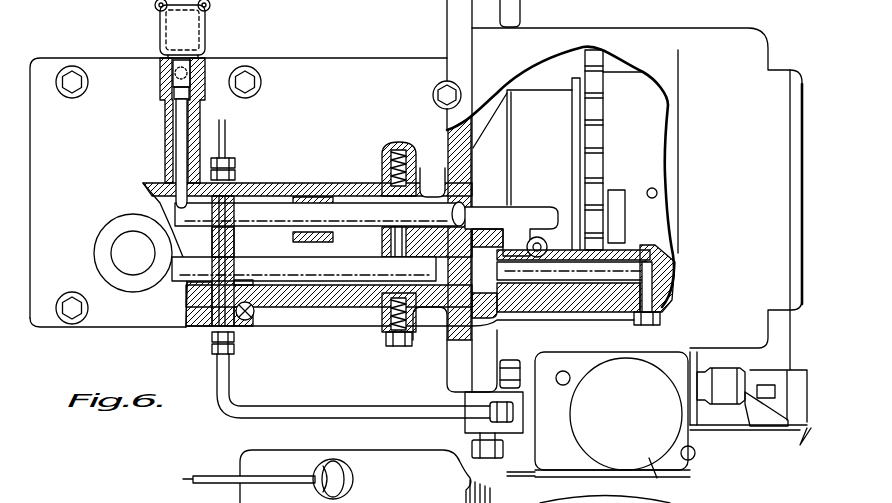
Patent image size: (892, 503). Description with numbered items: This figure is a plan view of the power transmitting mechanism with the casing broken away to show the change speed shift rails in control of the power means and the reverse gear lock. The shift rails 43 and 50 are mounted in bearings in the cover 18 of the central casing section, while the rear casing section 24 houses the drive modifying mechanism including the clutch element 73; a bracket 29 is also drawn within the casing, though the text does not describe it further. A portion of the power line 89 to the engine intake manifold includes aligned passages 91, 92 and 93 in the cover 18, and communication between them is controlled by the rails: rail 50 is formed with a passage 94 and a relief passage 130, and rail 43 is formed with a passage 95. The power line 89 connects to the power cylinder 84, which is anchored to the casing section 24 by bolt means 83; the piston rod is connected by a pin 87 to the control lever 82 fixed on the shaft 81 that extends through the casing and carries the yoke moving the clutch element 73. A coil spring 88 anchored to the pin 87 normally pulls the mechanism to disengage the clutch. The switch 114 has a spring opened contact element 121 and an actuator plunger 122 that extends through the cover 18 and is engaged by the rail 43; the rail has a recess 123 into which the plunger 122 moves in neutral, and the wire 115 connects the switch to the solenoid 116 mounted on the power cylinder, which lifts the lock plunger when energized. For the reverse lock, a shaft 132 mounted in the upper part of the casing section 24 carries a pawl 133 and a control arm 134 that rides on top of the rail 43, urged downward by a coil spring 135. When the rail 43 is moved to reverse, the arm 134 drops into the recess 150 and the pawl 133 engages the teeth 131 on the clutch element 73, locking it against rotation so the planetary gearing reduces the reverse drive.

The cover 18 is at (352, 72).
The casing section 24 is at (593, 37).
The bracket 29 is at (528, 103).
The shift rail 43 is at (340, 217).
The shift rail 50 is at (322, 271).
The clutch element 73 is at (638, 83).
The shaft 81 is at (726, 407).
The control lever 82 is at (746, 416).
The bolt means 83 is at (473, 449).
The power cylinder 84 is at (664, 358).
The pin 87 is at (772, 430).
The coil spring 88 is at (799, 440).
The power line 89 is at (377, 410).
The passage 91 is at (202, 327).
The passage 92 is at (213, 249).
The passage 93 is at (236, 194).
The passage 94 is at (237, 278).
The passage 95 is at (234, 249).
The switch 114 is at (190, 30).
The wire 115 is at (209, 477).
The solenoid 116 is at (657, 480).
The contact element 121 is at (172, 95).
The actuator plunger 122 is at (180, 147).
The recess 123 is at (174, 207).
The relief passage 130 is at (190, 282).
The teeth 131 is at (594, 128).
The shaft 132 is at (543, 273).
The pawl 133 is at (619, 221).
The control arm 134 is at (517, 215).
The coil spring 135 is at (538, 237).
The recess 150 is at (470, 207).